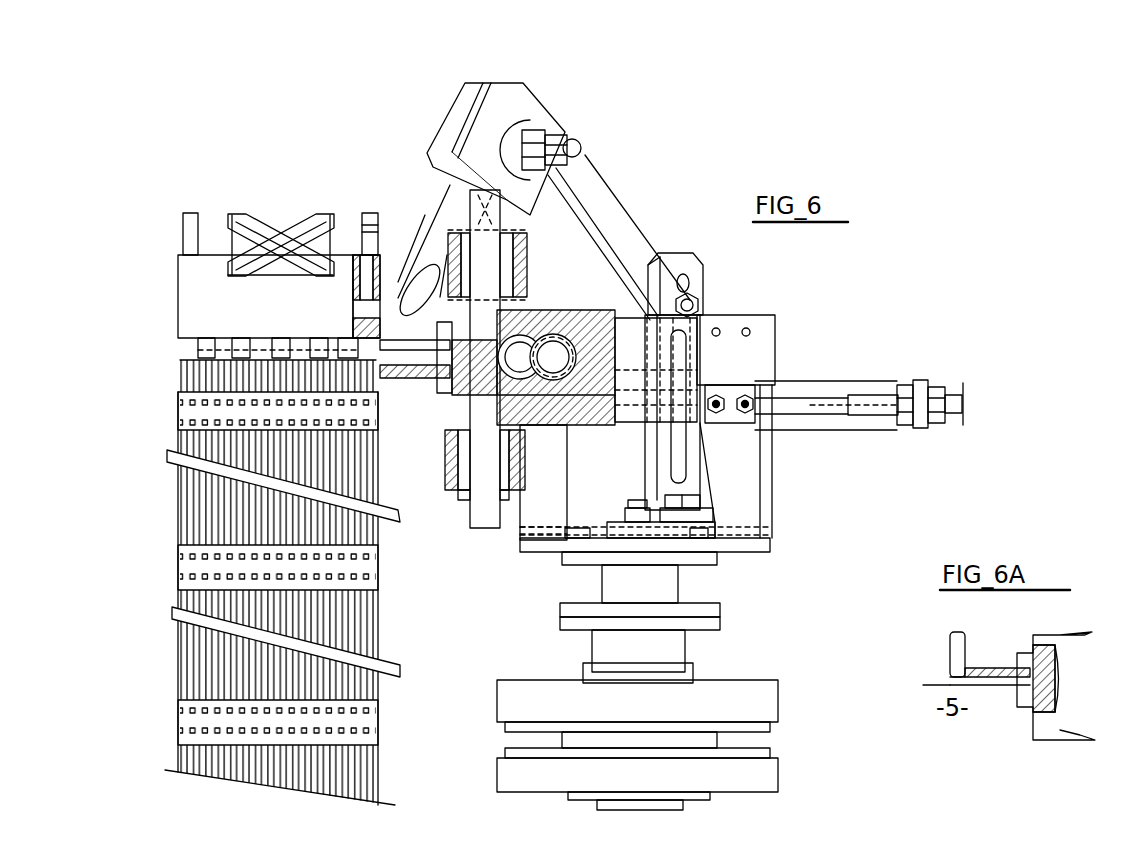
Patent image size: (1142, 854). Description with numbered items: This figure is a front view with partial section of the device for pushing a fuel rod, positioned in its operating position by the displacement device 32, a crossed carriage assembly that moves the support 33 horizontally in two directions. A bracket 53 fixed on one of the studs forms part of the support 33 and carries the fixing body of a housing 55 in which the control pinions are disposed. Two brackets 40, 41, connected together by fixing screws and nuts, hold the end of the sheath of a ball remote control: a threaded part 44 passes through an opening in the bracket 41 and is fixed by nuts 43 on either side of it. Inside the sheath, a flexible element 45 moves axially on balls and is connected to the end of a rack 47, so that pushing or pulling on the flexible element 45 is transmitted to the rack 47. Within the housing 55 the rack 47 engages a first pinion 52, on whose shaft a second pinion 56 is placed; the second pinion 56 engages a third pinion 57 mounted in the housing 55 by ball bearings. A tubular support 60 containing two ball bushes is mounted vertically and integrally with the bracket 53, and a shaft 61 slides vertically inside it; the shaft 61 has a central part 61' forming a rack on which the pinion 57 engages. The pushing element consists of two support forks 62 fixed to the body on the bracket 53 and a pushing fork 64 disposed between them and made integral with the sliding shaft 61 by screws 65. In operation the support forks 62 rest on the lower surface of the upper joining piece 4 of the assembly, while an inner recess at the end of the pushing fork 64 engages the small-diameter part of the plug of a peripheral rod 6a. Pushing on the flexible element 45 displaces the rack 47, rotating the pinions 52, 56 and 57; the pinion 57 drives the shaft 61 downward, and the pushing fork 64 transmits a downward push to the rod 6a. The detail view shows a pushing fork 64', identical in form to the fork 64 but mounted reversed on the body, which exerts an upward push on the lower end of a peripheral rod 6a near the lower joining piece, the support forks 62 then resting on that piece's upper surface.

In FIG. 6, the upper joining piece 4 is at (200, 278).
In FIG. 6, the peripheral rod 6a is at (368, 490).
In FIG. 6A, the peripheral rod 6a is at (950, 648).
In FIG. 6, the tubular support 60 is at (448, 248).
In FIG. 6, the shaft 61 is at (483, 341).
In FIG. 6, the central part forming a rack 61' is at (447, 387).
In FIG. 6, the support fork 62 is at (398, 345).
In FIG. 6, the pushing fork 64 is at (415, 388).
In FIG. 6A, the pushing fork 64' is at (1022, 670).
In FIG. 6, the screws 65 is at (440, 300).
In FIG. 6, the third pinion 57 is at (525, 350).
In FIG. 6, the second pinion 56 is at (558, 352).
In FIG. 6, the first pinion 52 is at (590, 332).
In FIG. 6, the housing 55 is at (672, 262).
In FIG. 6, the rack 47 is at (665, 393).
In FIG. 6, the bracket 40 is at (748, 365).
In FIG. 6, the bracket 41 is at (818, 395).
In FIG. 6, the threaded part 44 is at (877, 396).
In FIG. 6, the flexible element 45 is at (812, 412).
In FIG. 6, the nuts 43 is at (935, 422).
In FIG. 6, the support 33 is at (775, 538).
In FIG. 6, the displacement device 32 is at (712, 658).
In FIG. 6, the bracket 53 is at (545, 512).